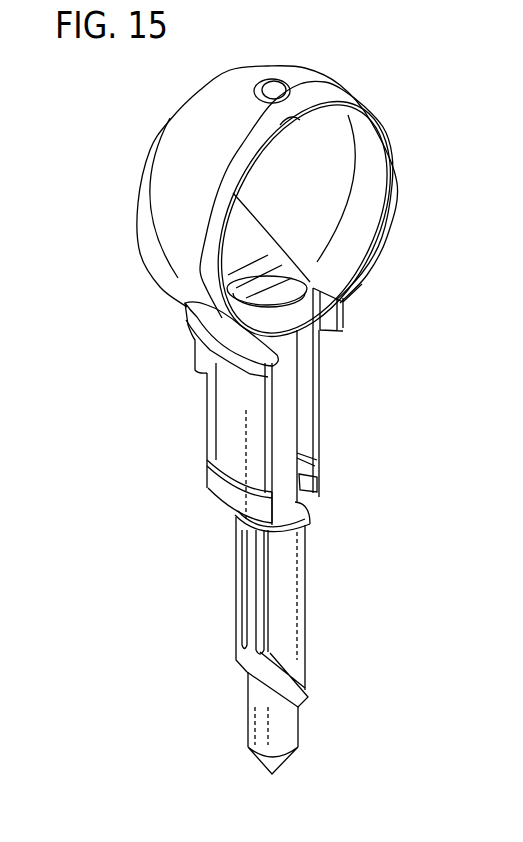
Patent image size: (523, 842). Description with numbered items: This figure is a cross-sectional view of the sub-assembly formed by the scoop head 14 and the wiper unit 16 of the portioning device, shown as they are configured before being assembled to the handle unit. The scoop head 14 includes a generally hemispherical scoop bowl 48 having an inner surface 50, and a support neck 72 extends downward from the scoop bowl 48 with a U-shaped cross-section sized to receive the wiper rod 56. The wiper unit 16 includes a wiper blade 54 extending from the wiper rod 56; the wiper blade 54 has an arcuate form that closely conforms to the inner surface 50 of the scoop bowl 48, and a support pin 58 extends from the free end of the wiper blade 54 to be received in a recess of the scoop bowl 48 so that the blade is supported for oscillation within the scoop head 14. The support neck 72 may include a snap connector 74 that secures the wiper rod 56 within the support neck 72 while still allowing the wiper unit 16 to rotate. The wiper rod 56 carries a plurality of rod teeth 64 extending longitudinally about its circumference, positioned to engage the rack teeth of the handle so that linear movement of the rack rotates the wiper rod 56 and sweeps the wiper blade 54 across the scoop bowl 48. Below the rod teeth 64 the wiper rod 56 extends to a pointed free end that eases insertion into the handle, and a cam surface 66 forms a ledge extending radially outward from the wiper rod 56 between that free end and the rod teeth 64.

The scoop head 14 is at (141, 163).
The scoop bowl 48 is at (173, 205).
The inner surface 50 is at (327, 163).
The wiper blade 54 is at (243, 240).
The support pin 58 is at (272, 85).
The wiper unit 16 is at (287, 403).
The support neck 72 is at (228, 424).
The wiper rod 56 is at (287, 445).
The snap connector 74 is at (317, 480).
The rod teeth 64 is at (245, 582).
The cam surface 66 is at (247, 662).